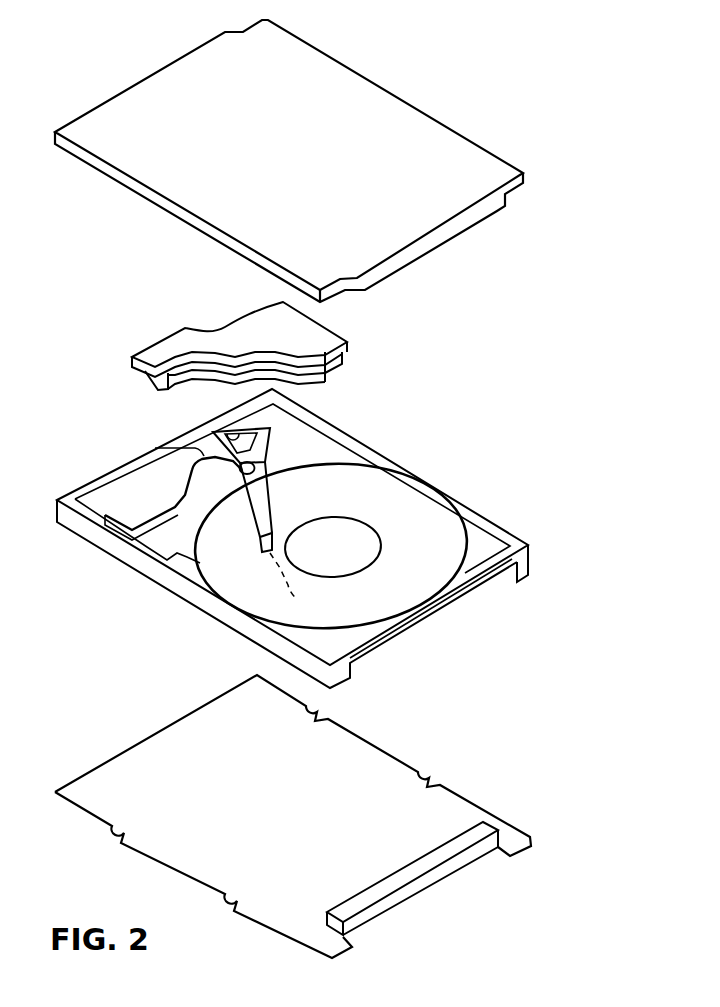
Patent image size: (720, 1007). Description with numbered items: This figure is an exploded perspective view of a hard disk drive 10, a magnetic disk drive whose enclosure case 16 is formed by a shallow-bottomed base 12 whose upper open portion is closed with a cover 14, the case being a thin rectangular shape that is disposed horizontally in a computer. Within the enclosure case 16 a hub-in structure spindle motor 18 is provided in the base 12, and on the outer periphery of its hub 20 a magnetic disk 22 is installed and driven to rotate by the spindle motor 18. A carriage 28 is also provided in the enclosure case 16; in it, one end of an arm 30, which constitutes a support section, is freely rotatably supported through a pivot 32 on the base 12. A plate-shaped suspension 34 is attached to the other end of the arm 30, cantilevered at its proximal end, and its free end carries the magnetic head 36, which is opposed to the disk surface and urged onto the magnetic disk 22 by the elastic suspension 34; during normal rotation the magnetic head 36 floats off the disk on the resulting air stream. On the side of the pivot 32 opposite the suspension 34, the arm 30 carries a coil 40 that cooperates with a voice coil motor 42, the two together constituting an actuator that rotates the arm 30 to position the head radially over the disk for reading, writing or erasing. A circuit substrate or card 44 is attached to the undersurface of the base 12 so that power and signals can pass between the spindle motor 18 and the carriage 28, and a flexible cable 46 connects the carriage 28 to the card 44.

The hard disk drive 10 is at (470, 87).
The base 12 is at (489, 523).
The cover 14 is at (470, 195).
The enclosure case 16 is at (510, 283).
The spindle motor 18 is at (380, 562).
The hub 20 is at (369, 534).
The magnetic disk 22 is at (368, 613).
The carriage 28 is at (253, 517).
The arm 30 is at (258, 492).
The pivot 32 is at (262, 470).
The suspension 34 is at (259, 543).
The magnetic head 36 is at (294, 583).
The coil 40 is at (238, 440).
The voice coil motor 42 is at (152, 355).
The circuit substrate 44 is at (133, 752).
The flexible cable 46 is at (177, 472).